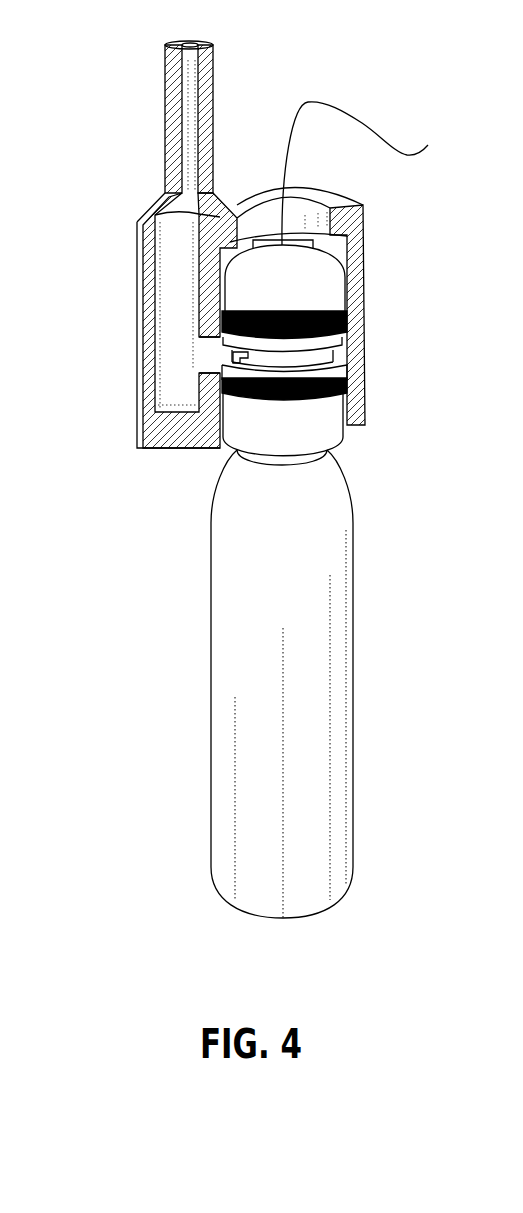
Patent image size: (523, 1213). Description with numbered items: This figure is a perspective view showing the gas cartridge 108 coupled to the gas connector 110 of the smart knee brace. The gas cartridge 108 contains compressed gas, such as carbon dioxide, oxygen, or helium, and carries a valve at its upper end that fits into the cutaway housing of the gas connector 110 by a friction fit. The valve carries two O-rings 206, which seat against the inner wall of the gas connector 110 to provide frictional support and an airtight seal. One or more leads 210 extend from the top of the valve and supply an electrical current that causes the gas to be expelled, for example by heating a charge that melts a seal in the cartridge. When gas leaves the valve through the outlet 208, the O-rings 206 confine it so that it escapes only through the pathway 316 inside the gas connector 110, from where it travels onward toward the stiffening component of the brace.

The gas connector 110 is at (135, 102).
The leads 210 is at (362, 123).
The O-rings 206 is at (347, 318).
The outlet 208 is at (236, 362).
The pathway 316 is at (200, 357).
The gas cartridge 108 is at (175, 600).